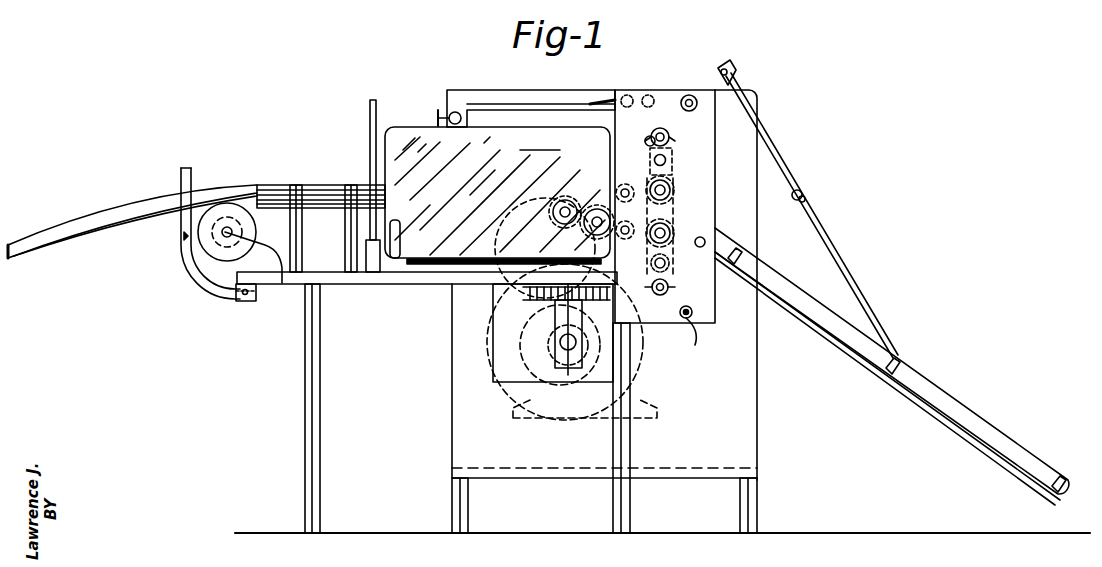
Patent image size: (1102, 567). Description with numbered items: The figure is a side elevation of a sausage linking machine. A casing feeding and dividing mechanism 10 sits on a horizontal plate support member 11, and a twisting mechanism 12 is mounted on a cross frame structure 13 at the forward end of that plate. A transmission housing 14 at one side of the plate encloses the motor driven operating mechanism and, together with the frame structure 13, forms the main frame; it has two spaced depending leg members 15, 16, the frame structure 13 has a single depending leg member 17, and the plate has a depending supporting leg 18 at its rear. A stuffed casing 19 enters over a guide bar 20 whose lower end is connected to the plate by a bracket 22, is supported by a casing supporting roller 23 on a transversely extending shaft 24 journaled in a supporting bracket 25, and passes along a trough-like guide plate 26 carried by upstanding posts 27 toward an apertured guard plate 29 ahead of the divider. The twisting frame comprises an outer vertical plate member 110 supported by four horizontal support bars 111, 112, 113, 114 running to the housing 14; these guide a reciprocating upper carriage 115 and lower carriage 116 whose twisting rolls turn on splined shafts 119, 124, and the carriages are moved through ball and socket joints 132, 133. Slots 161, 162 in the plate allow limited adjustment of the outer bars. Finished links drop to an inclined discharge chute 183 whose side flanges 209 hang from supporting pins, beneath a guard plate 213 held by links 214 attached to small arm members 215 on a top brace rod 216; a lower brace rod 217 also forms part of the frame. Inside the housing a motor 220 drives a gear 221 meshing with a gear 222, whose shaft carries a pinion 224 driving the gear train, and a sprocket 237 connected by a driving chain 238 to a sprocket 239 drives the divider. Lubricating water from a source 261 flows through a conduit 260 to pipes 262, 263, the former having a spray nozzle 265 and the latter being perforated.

The casing feeding and dividing mechanism 10 is at (399, 128).
The horizontal plate support member 11 is at (387, 284).
The twisting mechanism 12 is at (690, 186).
The cross frame structure 13 is at (718, 143).
The transmission housing 14 is at (748, 449).
The depending leg member 15 is at (452, 503).
The depending leg member 16 is at (757, 497).
The depending leg member 17 is at (613, 500).
The depending supporting leg 18 is at (320, 413).
The stuffed casing 19 is at (152, 190).
The guide bar 20 is at (192, 175).
The bracket 22 is at (250, 301).
The casing supporting roller 23 is at (240, 205).
The transversely extending shaft 24 is at (227, 232).
The supporting bracket 25 is at (266, 262).
The guide plate 26 is at (324, 185).
The upstanding post 27 is at (345, 236).
The guard plate 29 is at (370, 112).
The outer vertical plate member 110 is at (700, 322).
The support bar 111 is at (672, 118).
The support bar 112 is at (652, 182).
The support bar 113 is at (672, 224).
The support bar 114 is at (666, 276).
The upper carriage 115 is at (673, 146).
The lower carriage 116 is at (696, 240).
The splined shaft 119 is at (617, 193).
The splined shaft 124 is at (642, 214).
The ball and socket joint 132 is at (667, 164).
The ball and socket joint 133 is at (666, 262).
The slot 161 is at (648, 138).
The slot 162 is at (672, 286).
The discharge chute 183 is at (905, 400).
The side flange 209 is at (933, 390).
The guard plate 213 is at (830, 240).
The link 214 is at (776, 160).
The small arm member 215 is at (726, 54).
The top brace rod 216 is at (686, 96).
The brace rod 217 is at (698, 345).
The motor 220 is at (530, 395).
The gear 221 is at (556, 343).
The gear 222 is at (512, 224).
The pinion 224 is at (545, 259).
The sprocket 237 is at (562, 198).
The driving chain 238 is at (548, 217).
The sprocket 239 is at (560, 358).
The conduit 260 is at (512, 96).
The fluid source 261 is at (448, 110).
The pipe 262 is at (625, 94).
The pipe 263 is at (644, 92).
The spray nozzle 265 is at (605, 104).